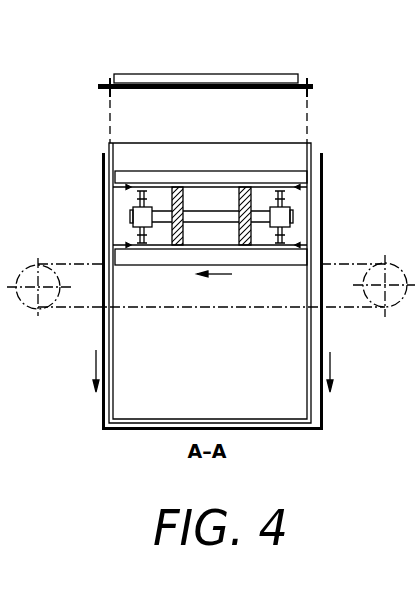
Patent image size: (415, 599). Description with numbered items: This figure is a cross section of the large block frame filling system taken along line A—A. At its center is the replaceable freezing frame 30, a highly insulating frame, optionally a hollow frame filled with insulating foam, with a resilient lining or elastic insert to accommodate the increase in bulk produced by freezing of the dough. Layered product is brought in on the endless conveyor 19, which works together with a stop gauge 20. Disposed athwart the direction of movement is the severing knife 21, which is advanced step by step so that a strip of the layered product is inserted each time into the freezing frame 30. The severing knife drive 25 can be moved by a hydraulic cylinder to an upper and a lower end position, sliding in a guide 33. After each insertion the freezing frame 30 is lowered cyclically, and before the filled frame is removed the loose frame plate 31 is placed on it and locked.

The frame plate 31 is at (280, 78).
The severing knife 21 is at (186, 181).
The freezing frame 30 is at (111, 202).
The stop gauge 20 is at (109, 251).
The severing knife drive 25 is at (288, 213).
The endless conveyor 19 is at (379, 318).
The guide 33 is at (0, 297).